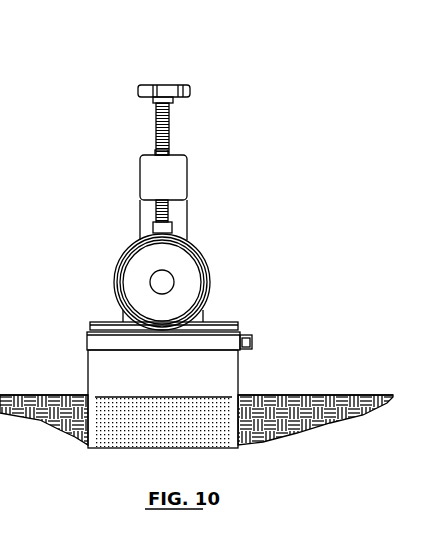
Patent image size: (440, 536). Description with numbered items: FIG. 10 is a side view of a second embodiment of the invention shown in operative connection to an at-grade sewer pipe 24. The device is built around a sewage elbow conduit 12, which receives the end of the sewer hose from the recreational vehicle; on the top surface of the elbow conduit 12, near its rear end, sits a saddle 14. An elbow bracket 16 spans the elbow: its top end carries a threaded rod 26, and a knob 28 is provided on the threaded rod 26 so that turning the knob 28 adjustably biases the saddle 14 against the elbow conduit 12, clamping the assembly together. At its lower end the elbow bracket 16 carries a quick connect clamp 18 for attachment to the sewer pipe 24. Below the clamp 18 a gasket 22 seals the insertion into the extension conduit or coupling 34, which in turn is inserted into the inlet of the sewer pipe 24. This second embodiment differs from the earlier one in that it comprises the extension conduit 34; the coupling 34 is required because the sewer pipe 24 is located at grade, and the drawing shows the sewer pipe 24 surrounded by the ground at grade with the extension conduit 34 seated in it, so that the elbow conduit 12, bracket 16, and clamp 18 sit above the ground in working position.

The knob 28 is at (196, 71).
The threaded rod 26 is at (170, 128).
The elbow bracket 16 is at (177, 180).
The saddle 14 is at (173, 228).
The sewage elbow conduit 12 is at (213, 282).
The gasket 22 is at (238, 329).
The quick connect clamp 18 is at (90, 342).
The extension conduit 34 is at (88, 372).
The sewer pipe 24 is at (196, 402).